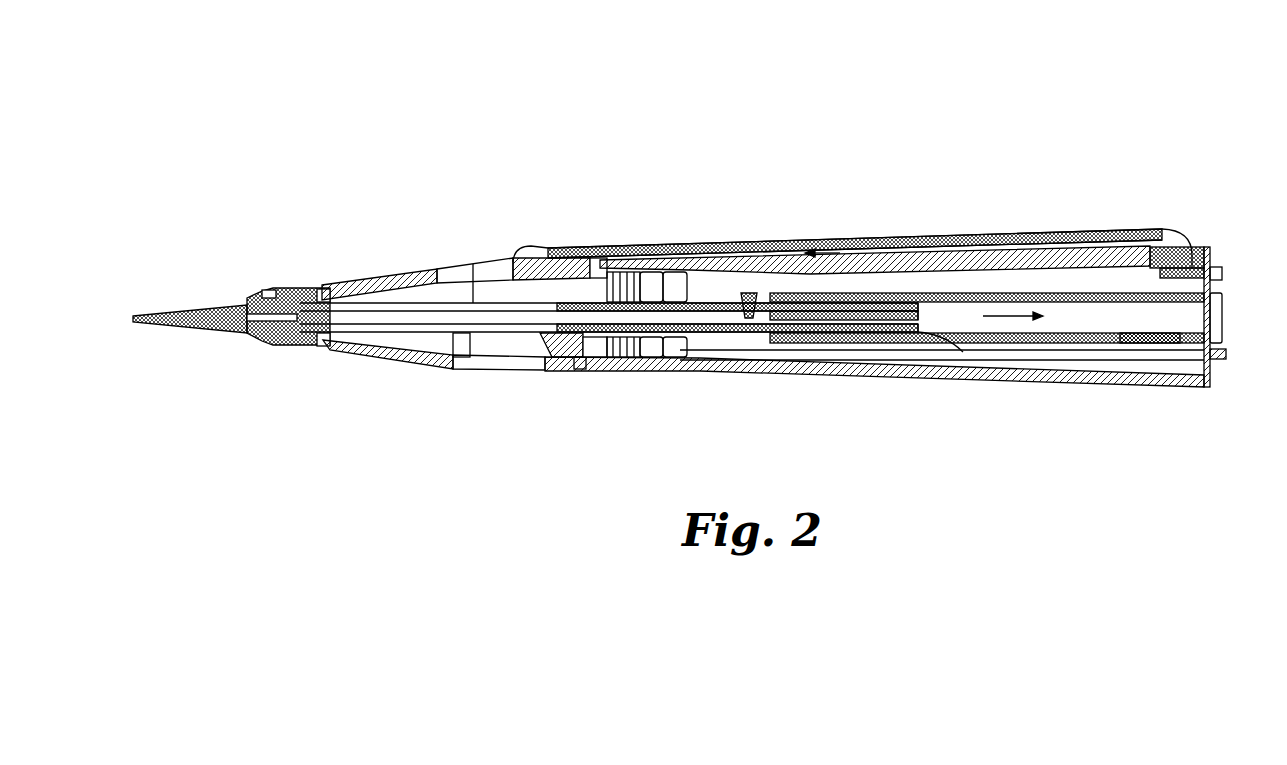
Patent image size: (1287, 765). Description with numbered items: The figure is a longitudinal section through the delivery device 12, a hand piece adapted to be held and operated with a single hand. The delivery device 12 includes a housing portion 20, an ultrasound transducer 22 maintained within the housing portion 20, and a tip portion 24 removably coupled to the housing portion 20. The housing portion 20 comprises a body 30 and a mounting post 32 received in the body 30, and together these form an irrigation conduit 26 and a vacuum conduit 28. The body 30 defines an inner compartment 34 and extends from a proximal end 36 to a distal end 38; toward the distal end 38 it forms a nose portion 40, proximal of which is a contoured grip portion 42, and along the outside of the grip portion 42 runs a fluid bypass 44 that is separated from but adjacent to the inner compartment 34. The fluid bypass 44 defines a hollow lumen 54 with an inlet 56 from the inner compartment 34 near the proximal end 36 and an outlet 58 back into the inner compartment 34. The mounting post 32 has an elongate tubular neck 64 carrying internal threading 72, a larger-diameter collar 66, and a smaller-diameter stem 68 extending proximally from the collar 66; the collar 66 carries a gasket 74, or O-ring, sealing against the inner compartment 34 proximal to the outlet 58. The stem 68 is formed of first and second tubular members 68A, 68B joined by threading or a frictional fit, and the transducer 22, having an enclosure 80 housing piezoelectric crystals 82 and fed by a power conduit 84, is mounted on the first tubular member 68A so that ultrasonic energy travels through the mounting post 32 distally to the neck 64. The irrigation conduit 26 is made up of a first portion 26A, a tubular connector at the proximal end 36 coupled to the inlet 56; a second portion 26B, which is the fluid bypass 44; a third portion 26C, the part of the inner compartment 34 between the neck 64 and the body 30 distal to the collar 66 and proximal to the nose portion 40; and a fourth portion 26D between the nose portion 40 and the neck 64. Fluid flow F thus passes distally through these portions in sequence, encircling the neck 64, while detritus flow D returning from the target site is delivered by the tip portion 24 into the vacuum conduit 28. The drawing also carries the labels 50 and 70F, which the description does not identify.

The delivery device 12 is at (405, 125).
The housing portion 20 is at (907, 383).
The ultrasound transducer 22 is at (658, 355).
The tip portion 24 is at (277, 347).
The irrigation conduit 26 is at (1043, 240).
The first portion 26A is at (1223, 283).
The second portion 26B is at (1103, 243).
The third portion 26C is at (440, 293).
The fourth portion 26D is at (273, 347).
The vacuum conduit 28 is at (1058, 328).
The body 30 is at (820, 373).
The mounting post 32 is at (723, 324).
The inner compartment 34 is at (736, 292).
The proximal end 36 is at (1213, 257).
The distal end 38 is at (263, 298).
The nose portion 40 is at (327, 293).
The grip portion 42 is at (605, 360).
The fluid bypass 44 is at (867, 233).
The lower ring 50 is at (325, 352).
The hollow lumen 54 is at (932, 228).
The inlet 56 is at (1165, 242).
The outlet 58 is at (545, 243).
The neck 64 is at (455, 350).
The collar 66 is at (592, 267).
The stem 68 is at (687, 297).
The first tubular member 68A is at (945, 338).
The second tubular member 68B is at (1162, 341).
The fin 70F is at (749, 315).
The internal threading 72 is at (287, 292).
The gasket 74 is at (567, 357).
The enclosure 80 is at (652, 288).
The piezoelectric crystals 82 is at (633, 360).
The power conduit 84 is at (872, 355).
The fluid flow F is at (822, 243).
The detritus flow D is at (1003, 320).